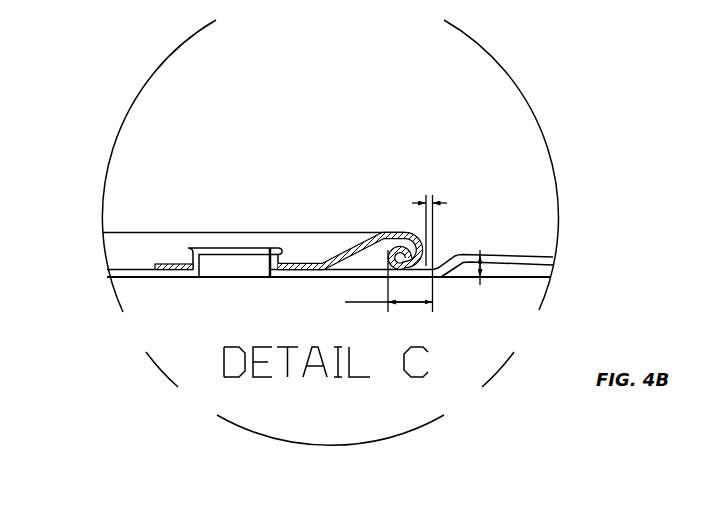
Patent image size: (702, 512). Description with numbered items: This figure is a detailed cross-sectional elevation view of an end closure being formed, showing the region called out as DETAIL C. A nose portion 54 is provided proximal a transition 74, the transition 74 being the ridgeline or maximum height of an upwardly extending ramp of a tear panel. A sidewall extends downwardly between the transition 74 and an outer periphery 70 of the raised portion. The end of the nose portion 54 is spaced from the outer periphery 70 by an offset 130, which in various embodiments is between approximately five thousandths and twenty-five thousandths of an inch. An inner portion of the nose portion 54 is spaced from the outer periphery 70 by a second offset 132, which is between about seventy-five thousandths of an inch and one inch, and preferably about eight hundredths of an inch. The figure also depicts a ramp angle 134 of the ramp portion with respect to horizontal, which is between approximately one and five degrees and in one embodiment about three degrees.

The nose portion 54 is at (402, 222).
The outer periphery 70 is at (445, 275).
The transition 74 is at (467, 247).
The offset 130 is at (438, 193).
The second offset 132 is at (418, 308).
The ramp angle 134 is at (490, 273).